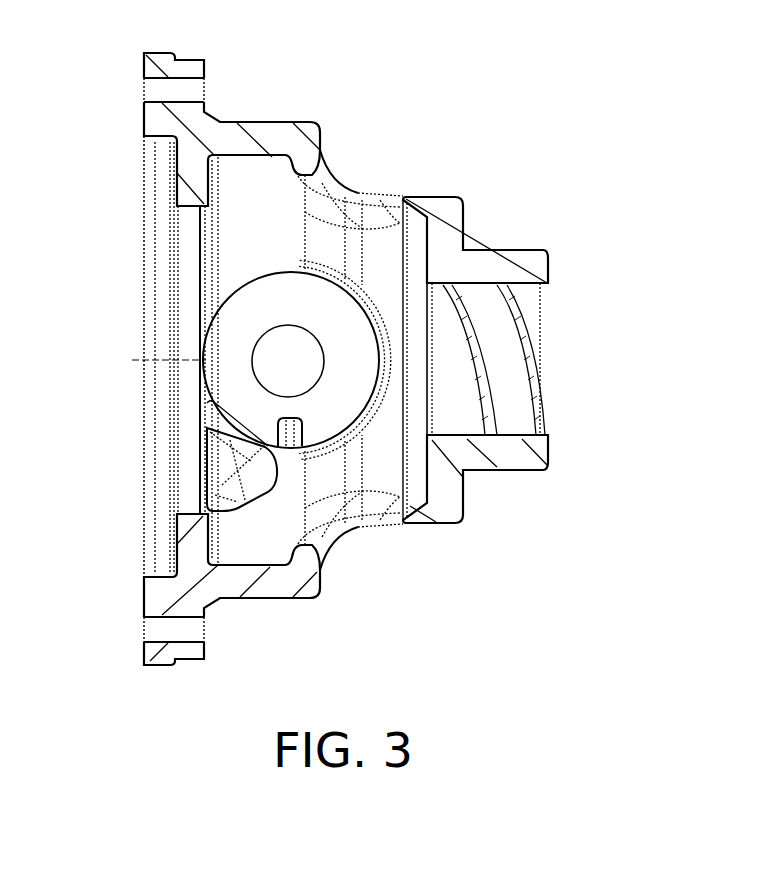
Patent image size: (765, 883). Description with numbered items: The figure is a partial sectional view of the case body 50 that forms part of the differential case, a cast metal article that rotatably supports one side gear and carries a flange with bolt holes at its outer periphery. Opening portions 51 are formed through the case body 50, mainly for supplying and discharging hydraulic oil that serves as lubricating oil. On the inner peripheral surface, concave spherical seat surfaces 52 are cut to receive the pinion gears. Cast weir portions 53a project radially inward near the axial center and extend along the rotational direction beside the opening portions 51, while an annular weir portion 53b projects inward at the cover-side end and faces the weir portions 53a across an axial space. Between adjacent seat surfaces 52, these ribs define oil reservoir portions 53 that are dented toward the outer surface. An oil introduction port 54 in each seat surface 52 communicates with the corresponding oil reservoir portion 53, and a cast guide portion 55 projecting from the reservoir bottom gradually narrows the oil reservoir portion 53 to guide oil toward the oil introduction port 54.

The case body 50 is at (314, 94).
The opening portion 51 is at (359, 187).
The seat surface 52 is at (233, 340).
The oil reservoir portion 53 is at (256, 161).
The weir portion 53a is at (307, 163).
The annular weir portion 53b is at (190, 197).
The oil introduction port 54 is at (288, 416).
The guide portion 55 is at (228, 458).